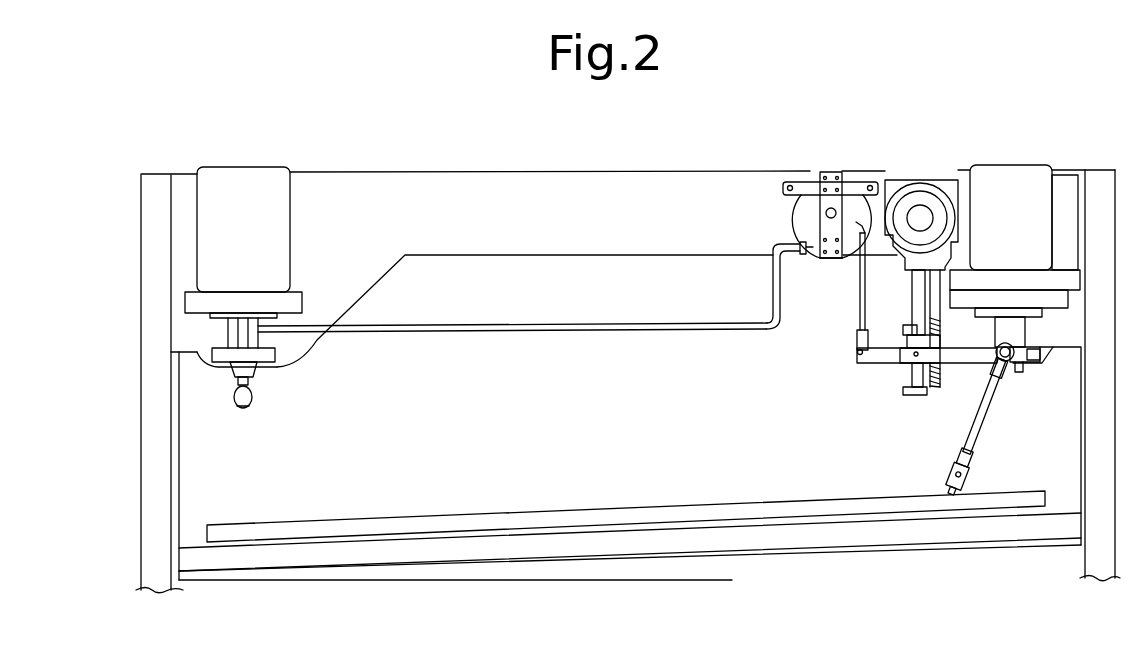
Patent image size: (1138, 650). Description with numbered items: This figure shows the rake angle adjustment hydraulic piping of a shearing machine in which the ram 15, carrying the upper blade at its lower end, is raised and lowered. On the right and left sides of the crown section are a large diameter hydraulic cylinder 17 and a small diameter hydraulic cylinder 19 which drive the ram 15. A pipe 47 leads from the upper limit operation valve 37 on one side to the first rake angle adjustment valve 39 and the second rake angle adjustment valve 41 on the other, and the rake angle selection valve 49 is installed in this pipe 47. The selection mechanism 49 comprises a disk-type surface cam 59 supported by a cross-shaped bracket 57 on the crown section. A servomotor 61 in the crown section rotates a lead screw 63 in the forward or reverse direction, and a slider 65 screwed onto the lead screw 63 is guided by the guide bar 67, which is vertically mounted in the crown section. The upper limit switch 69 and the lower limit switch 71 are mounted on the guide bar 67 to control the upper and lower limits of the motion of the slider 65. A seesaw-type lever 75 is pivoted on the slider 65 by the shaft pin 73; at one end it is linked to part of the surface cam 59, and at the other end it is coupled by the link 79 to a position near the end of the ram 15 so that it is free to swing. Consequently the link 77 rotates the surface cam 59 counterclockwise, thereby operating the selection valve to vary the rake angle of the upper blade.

The ram 15 is at (710, 441).
The large diameter hydraulic cylinder 17 is at (258, 230).
The small diameter hydraulic cylinder 19 is at (1030, 230).
The upper limit operation valve 37 is at (207, 352).
The first rake angle adjustment valve 39 is at (838, 259).
The second rake angle adjustment valve 41 is at (830, 172).
The pipe 47 is at (605, 333).
The rake angle selection valve 49 is at (768, 234).
The cross-shaped bracket 57 is at (856, 188).
The disk-type surface cam 59 is at (800, 212).
The servomotor 61 is at (920, 216).
The lead screw 63 is at (940, 373).
The slider 65 is at (939, 350).
The guide bar 67 is at (912, 296).
The upper limit switch 69 is at (904, 331).
The lower limit switch 71 is at (919, 396).
The shaft pin 73 is at (917, 356).
The seesaw-type lever 75 is at (878, 358).
The link 77 is at (858, 298).
The link 79 is at (975, 430).